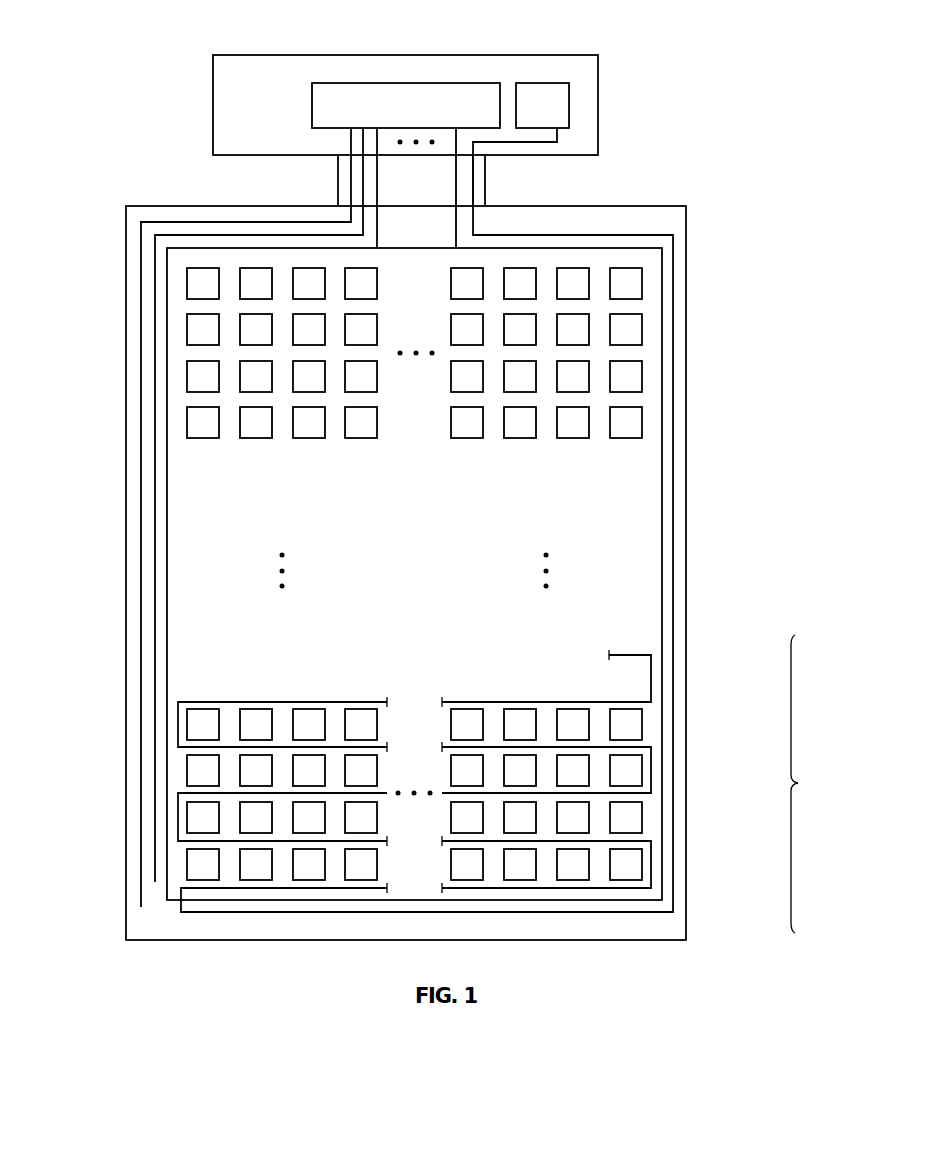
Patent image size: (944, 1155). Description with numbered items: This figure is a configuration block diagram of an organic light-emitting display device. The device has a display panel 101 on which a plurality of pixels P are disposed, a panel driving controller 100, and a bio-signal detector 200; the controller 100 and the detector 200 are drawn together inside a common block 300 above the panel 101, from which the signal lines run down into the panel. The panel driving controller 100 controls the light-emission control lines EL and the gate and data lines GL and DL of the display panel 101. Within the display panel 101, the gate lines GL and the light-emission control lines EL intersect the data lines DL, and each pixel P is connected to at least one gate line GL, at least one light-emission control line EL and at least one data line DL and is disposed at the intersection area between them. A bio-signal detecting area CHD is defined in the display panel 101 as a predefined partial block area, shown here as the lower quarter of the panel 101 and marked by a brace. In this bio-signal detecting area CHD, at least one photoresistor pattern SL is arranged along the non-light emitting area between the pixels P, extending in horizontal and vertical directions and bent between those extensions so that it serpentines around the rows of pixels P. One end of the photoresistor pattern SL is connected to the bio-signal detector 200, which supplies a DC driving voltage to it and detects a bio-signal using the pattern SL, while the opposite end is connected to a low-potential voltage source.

The panel driving controller 100 is at (408, 93).
The bio-signal detector 200 is at (543, 80).
The driver integrated circuit 300 is at (598, 105).
The display panel 101 is at (686, 507).
The data line DL is at (377, 181).
The gate line GL is at (155, 334).
The light-emission control line EL is at (140, 403).
The photoresistor pattern SL is at (473, 181).
The pixel P is at (642, 284).
The bio-signal detecting area CHD is at (821, 784).